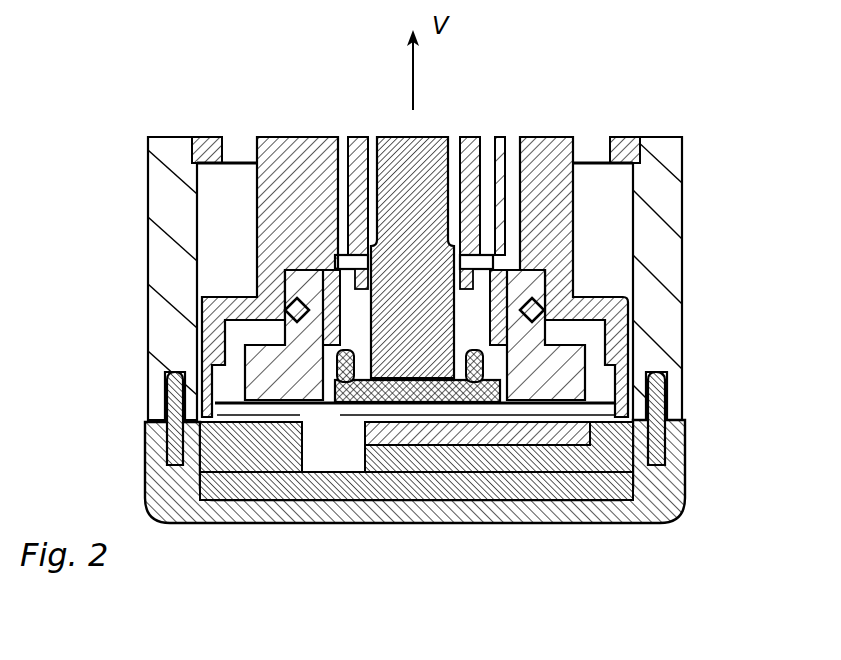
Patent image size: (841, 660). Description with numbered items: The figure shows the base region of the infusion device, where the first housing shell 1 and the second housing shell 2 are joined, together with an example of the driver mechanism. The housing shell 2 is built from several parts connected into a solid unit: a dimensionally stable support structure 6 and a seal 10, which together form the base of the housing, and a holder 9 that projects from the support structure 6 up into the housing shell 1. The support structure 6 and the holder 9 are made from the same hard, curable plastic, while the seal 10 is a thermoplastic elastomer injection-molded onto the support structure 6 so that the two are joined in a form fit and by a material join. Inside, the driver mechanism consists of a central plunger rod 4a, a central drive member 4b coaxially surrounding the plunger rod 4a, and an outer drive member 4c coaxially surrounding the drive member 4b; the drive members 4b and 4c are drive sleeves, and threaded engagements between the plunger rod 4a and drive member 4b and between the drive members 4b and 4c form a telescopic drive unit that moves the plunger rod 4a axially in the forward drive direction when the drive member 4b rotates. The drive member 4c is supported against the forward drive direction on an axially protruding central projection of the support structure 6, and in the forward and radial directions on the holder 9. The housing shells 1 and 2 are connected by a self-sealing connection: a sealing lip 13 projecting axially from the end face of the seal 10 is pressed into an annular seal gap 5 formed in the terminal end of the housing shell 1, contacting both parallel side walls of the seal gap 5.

The first housing shell 1 is at (665, 245).
The second housing shell 2 is at (516, 545).
The plunger rod 4a is at (398, 137).
The central drive member 4b is at (470, 137).
The outer drive member 4c is at (498, 137).
The seal gap 5 is at (630, 370).
The support structure 6 is at (312, 453).
The holder 9 is at (270, 137).
The seal 10 is at (665, 510).
The sealing lip 13 is at (663, 392).